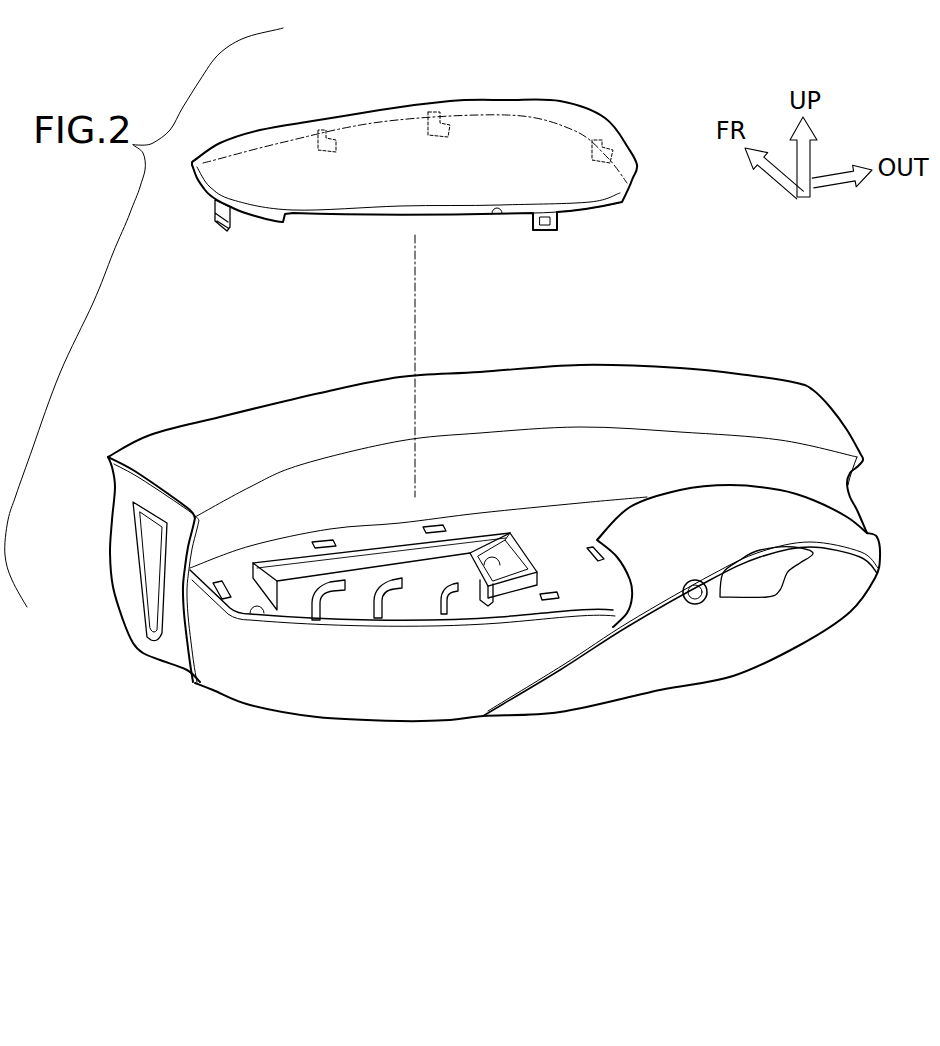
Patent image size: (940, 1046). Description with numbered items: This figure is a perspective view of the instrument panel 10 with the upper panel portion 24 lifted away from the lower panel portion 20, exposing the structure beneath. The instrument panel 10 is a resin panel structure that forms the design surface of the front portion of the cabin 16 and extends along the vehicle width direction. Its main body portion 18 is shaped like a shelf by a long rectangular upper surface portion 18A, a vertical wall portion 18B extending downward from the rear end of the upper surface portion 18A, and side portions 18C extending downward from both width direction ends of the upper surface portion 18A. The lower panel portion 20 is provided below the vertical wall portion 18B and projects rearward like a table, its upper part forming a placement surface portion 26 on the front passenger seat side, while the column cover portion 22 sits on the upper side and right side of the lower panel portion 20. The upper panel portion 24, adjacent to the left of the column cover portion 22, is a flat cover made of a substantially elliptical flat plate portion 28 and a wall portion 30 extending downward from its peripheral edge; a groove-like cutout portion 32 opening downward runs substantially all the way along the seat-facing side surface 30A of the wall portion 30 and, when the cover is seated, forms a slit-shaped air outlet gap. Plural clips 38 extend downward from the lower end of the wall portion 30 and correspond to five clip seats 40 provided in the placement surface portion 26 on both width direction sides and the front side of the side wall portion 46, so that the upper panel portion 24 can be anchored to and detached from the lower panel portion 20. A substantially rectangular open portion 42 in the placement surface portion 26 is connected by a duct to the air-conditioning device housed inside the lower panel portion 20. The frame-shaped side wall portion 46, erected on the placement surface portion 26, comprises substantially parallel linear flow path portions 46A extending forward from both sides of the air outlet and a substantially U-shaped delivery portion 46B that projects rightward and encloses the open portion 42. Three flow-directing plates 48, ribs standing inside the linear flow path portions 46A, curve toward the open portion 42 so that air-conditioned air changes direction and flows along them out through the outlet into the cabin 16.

The instrument panel 10 is at (855, 391).
The cabin 16 is at (700, 793).
The main body portion 18 is at (505, 354).
The upper surface portion 18A is at (593, 378).
The vertical wall portion 18B is at (840, 478).
The side portions 18C is at (125, 492).
The lower panel portion 20 is at (292, 705).
The column cover portion 22 is at (860, 543).
The upper panel portion 24 is at (563, 79).
The placement surface portion 26 is at (246, 611).
The flat plate portion 28 is at (270, 160).
The wall portion 30 is at (615, 196).
The side surface 30A is at (578, 211).
The cutout portion 32 is at (497, 211).
The clips 38 is at (340, 132).
The clip seats 40 is at (218, 577).
The open portion 42 is at (497, 560).
The side wall portion 46 is at (290, 560).
The linear flow path portions 46A is at (493, 601).
The delivery portion 46B is at (517, 545).
The flow-directing plates 48 is at (317, 623).